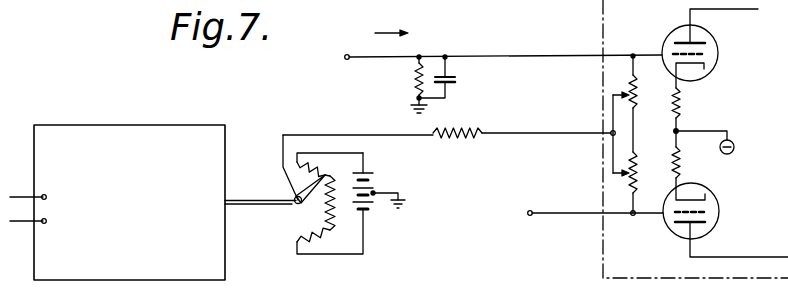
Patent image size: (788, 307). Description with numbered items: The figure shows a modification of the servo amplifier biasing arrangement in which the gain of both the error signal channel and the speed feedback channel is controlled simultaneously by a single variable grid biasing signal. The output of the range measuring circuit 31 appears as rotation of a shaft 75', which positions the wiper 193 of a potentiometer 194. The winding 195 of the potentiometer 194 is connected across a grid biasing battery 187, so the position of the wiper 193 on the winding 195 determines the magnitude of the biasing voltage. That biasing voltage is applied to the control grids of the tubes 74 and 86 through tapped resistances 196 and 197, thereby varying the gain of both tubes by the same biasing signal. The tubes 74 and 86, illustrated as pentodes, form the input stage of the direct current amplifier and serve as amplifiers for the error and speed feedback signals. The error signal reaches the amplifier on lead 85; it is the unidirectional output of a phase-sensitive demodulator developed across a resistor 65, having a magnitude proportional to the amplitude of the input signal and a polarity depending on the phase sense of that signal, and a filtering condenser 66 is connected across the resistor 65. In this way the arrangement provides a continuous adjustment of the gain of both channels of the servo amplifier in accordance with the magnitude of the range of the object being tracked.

The range measuring circuit 31 is at (193, 125).
The shaft 75' is at (260, 221).
The wiper 193 is at (298, 196).
The potentiometer 194 is at (292, 221).
The winding 195 is at (336, 234).
The grid biasing battery 187 is at (378, 182).
The lead 85 is at (548, 55).
The resistor 65 is at (415, 78).
The filtering condenser 66 is at (454, 84).
The tapped resistance 196 is at (630, 78).
The tapped resistance 197 is at (632, 180).
The tube 74 is at (718, 41).
The tube 86 is at (719, 220).